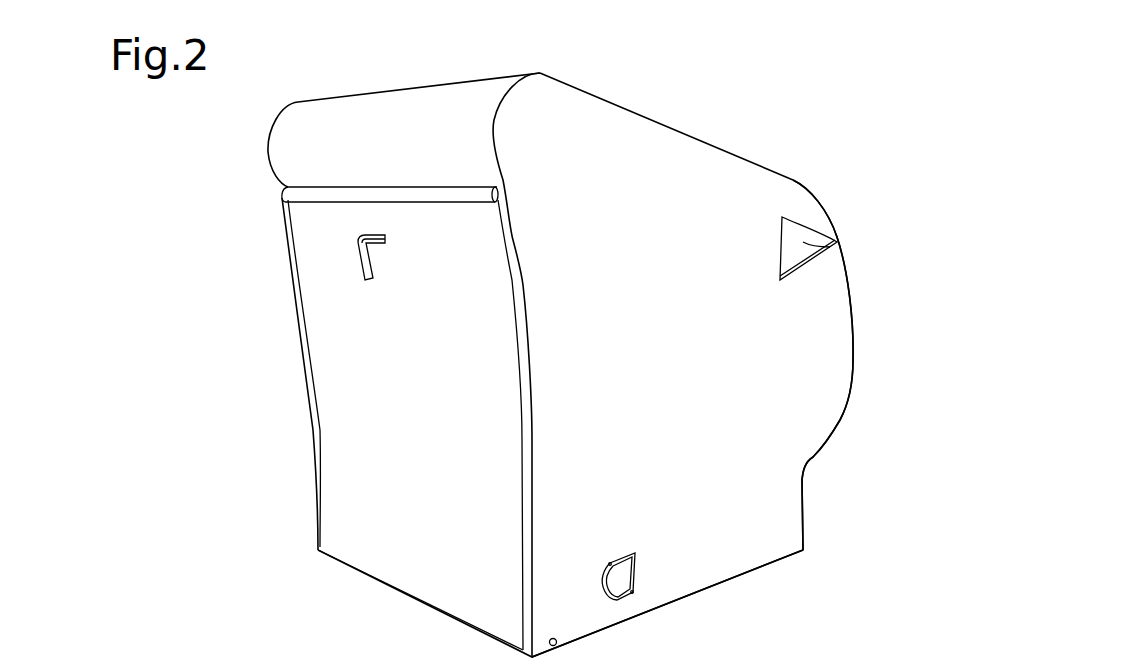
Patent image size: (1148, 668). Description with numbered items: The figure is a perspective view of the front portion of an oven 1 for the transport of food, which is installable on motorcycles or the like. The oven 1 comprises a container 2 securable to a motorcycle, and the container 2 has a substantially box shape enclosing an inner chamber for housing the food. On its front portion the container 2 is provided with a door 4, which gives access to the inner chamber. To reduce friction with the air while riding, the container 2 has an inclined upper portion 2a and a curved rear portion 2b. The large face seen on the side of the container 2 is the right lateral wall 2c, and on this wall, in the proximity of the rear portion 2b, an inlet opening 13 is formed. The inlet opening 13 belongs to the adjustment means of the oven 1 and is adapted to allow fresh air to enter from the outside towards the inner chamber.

The oven 1 is at (853, 55).
The container 2 is at (857, 307).
The inclined upper portion 2a is at (652, 118).
The curved rear portion 2b is at (850, 373).
The right lateral wall 2c is at (700, 363).
The door 4 is at (414, 410).
The inlet opening 13 is at (837, 240).